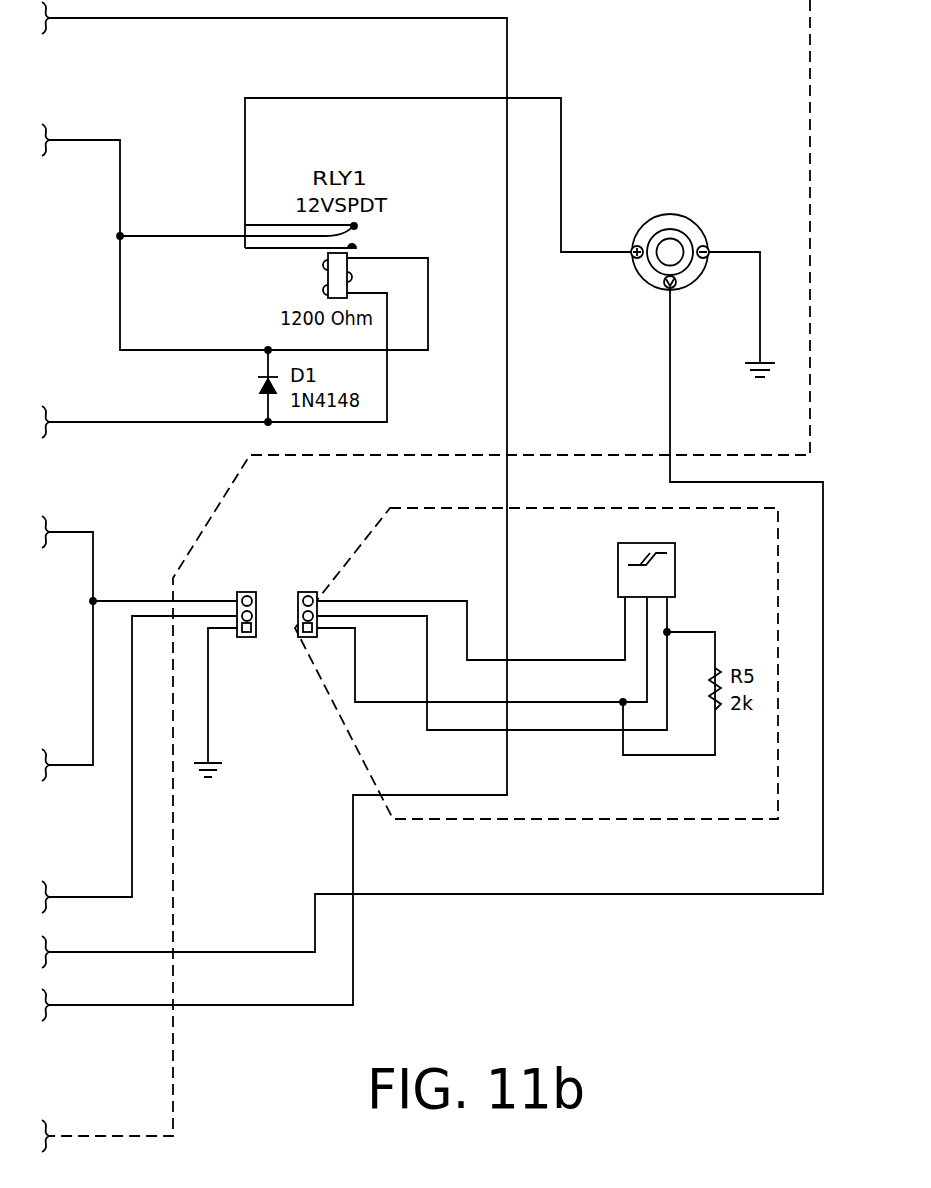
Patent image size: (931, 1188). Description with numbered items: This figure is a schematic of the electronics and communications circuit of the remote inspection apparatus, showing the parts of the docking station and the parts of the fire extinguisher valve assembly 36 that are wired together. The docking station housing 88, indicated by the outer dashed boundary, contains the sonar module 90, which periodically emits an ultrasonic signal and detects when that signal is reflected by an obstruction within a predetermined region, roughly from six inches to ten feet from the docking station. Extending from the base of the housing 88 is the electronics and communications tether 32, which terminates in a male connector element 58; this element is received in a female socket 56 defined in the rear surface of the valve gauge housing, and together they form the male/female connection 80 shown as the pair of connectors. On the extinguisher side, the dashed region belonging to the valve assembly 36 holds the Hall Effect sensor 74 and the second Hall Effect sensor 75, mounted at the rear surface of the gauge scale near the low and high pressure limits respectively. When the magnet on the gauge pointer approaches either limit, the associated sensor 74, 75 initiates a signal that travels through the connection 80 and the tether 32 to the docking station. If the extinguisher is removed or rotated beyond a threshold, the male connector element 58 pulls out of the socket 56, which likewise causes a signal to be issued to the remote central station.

The electronics and communications tether 32 is at (224, 646).
The fire extinguisher valve assembly 36 is at (560, 819).
The female socket 56 is at (297, 626).
The male connector element 58 is at (258, 626).
The Hall Effect sensor 74 is at (673, 555).
The second Hall Effect sensor 75 is at (675, 578).
The male/female connection 80 is at (275, 611).
The docking station housing 88 is at (810, 283).
The sonar module 90 is at (690, 270).